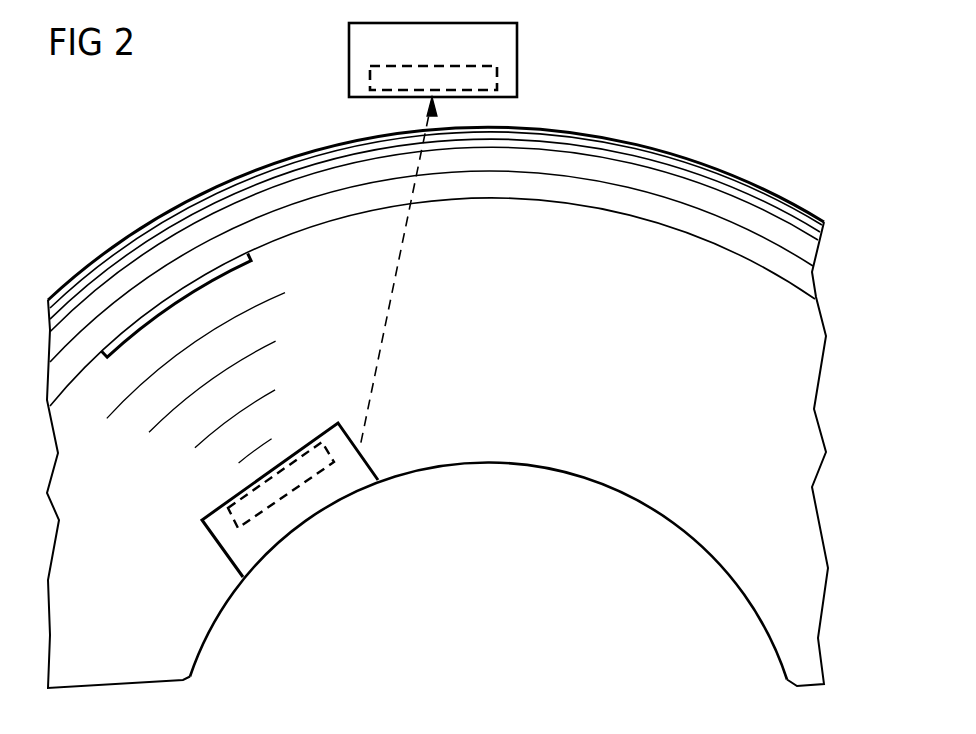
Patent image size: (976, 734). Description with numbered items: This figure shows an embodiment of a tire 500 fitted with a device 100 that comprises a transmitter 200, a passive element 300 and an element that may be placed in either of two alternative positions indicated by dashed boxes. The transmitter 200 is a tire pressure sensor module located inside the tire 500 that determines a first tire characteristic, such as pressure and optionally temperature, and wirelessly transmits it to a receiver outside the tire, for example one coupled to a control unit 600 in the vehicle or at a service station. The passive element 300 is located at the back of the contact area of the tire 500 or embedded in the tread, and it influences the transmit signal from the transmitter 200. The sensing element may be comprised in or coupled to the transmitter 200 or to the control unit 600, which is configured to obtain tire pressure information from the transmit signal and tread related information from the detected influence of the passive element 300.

The device 100 is at (535, 543).
The transmitter 200 is at (366, 463).
The passive element 300 is at (252, 262).
The tire 500 is at (610, 210).
The control unit 600 is at (517, 57).